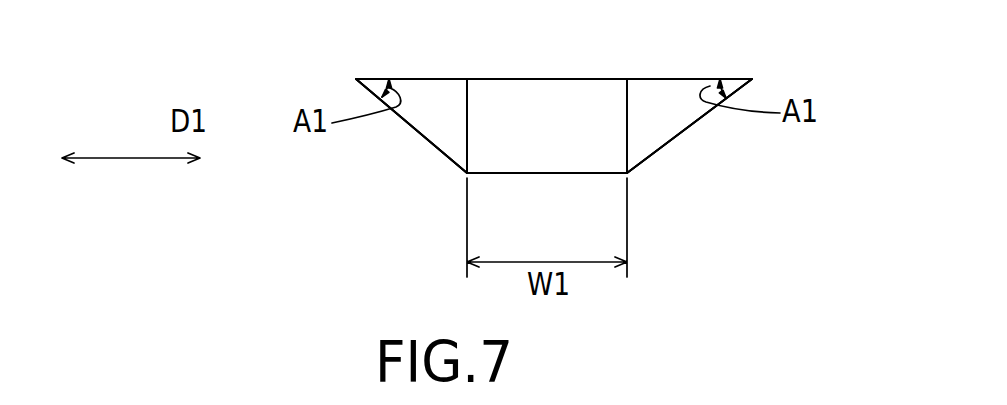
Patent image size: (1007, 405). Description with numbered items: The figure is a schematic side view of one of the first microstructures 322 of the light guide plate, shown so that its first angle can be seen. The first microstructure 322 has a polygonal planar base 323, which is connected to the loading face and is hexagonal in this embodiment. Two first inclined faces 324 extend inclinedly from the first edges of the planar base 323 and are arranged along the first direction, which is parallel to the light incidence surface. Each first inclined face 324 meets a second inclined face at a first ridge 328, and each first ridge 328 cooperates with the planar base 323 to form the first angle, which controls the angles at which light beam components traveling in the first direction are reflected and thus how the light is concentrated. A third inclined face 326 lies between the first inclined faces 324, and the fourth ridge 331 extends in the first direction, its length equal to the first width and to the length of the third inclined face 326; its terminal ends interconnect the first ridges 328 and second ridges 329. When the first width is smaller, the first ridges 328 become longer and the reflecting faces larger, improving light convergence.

The first microstructure 322 is at (658, 173).
The polygonal planar base 323 is at (663, 79).
The first inclined face 324 is at (437, 113).
The third inclined face 326 is at (517, 113).
The first ridge 328 is at (410, 127).
The second ridge 329 is at (468, 142).
The fourth ridge 331 is at (548, 173).